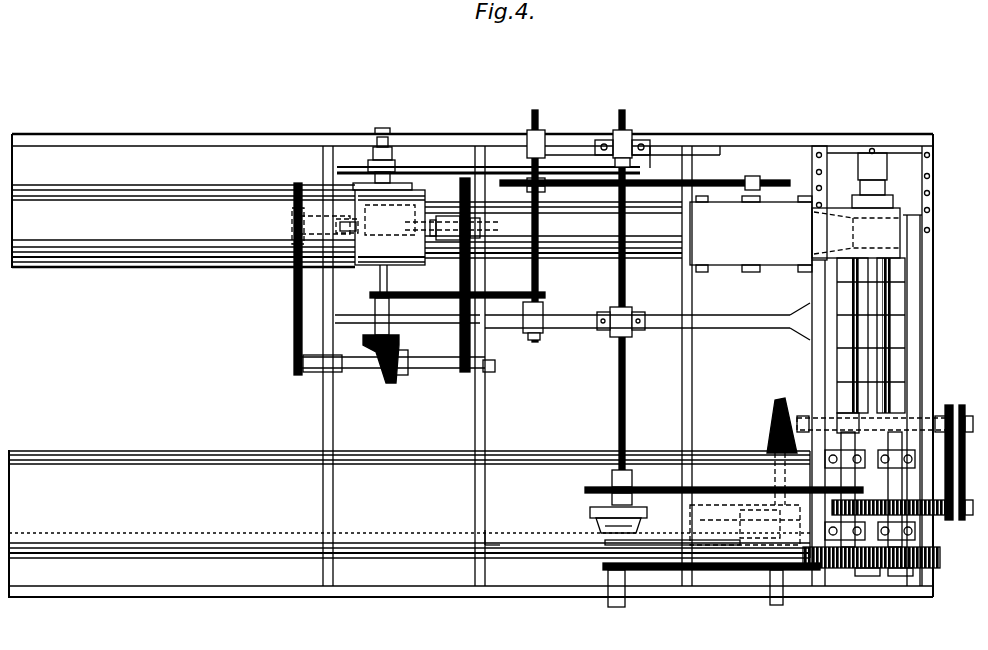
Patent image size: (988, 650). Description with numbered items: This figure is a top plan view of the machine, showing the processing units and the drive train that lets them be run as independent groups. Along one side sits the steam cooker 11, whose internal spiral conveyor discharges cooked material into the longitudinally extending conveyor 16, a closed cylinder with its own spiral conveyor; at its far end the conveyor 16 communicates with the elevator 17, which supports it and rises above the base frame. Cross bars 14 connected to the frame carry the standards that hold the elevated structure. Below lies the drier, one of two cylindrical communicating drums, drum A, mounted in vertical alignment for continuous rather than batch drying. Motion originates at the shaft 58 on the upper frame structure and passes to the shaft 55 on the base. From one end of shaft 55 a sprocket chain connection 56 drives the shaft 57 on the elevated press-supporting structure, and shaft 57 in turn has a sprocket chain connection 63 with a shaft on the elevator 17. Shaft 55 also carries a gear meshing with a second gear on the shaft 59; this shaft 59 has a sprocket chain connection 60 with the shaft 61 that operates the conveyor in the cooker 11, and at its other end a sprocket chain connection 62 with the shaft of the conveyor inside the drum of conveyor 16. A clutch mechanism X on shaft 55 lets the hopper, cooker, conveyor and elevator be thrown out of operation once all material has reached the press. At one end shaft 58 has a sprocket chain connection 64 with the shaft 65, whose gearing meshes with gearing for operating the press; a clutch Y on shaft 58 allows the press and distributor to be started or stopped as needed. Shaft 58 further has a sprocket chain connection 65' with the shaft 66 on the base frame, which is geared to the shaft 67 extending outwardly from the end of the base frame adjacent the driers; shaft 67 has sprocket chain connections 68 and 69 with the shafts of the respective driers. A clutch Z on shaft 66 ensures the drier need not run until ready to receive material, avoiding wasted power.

The steam cooker 11 is at (221, 231).
The cross bars 14 is at (322, 405).
The conveyor 16 is at (596, 231).
The elevator 17 is at (728, 237).
The shaft 55 is at (376, 277).
The sprocket chain connection 56 is at (437, 294).
The shaft 57 is at (526, 273).
The shaft 58 is at (615, 280).
The shaft 59 is at (374, 360).
The sprocket chain connection 60 is at (462, 272).
The shaft 61 is at (449, 224).
The sprocket chain connection 62 is at (293, 295).
The sprocket chain connection 63 is at (650, 183).
The sprocket chain connection 64 is at (716, 487).
The shaft 65 is at (875, 368).
The sprocket chain connection 65' is at (711, 593).
The shaft 66 is at (786, 578).
The shaft 67 is at (937, 414).
The sprocket chain connection 68 is at (955, 487).
The sprocket chain connection 69 is at (962, 470).
The drum A is at (409, 504).
The clutch mechanism X is at (315, 185).
The clutch Y is at (588, 522).
The clutch Z is at (745, 471).